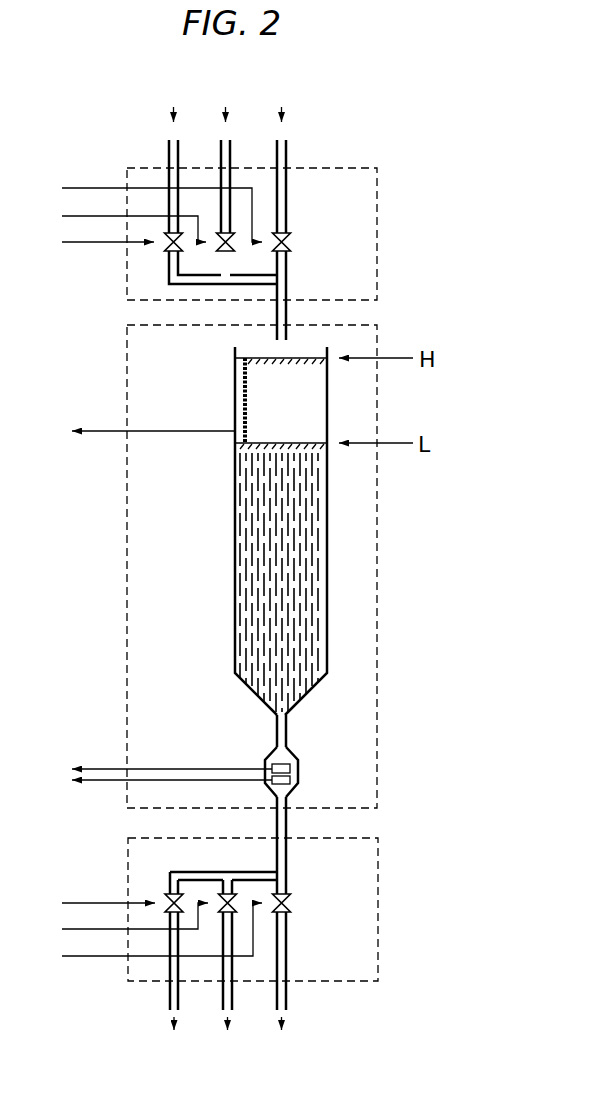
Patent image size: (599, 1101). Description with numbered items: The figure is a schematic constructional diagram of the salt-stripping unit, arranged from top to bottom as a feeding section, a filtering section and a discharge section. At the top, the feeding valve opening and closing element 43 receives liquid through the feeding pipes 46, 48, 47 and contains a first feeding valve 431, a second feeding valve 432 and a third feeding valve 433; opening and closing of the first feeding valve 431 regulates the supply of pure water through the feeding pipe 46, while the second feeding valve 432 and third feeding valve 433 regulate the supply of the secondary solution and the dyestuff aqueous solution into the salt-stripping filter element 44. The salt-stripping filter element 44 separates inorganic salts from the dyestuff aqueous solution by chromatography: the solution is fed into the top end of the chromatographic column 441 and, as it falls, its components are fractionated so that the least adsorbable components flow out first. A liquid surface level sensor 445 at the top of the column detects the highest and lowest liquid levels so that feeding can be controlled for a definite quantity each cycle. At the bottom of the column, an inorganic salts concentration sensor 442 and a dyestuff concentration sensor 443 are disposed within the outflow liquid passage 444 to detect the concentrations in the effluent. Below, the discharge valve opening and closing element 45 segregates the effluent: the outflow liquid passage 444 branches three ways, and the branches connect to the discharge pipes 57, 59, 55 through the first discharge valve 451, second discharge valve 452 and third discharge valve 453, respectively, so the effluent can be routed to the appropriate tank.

The feeding valve opening and closing element 43 is at (378, 228).
The first feeding valve 431 is at (167, 251).
The second feeding valve 432 is at (234, 247).
The third feeding valve 433 is at (291, 242).
The feeding pipe 46 is at (178, 162).
The feeding pipe 47 is at (286, 160).
The feeding pipe 48 is at (230, 160).
The salt-stripping filter element 44 is at (378, 533).
The chromatographic column 441 is at (328, 586).
The inorganic salts concentration sensor 442 is at (291, 768).
The dyestuff concentration sensor 443 is at (291, 779).
The outflow liquid passage 444 is at (297, 757).
The liquid surface level sensor 445 is at (243, 388).
The discharge valve opening and closing element 45 is at (378, 917).
The first discharge valve 451 is at (168, 896).
The second discharge valve 452 is at (221, 896).
The third discharge valve 453 is at (289, 903).
The discharge pipe 55 is at (299, 971).
The discharge pipe 57 is at (179, 995).
The discharge pipe 59 is at (233, 995).